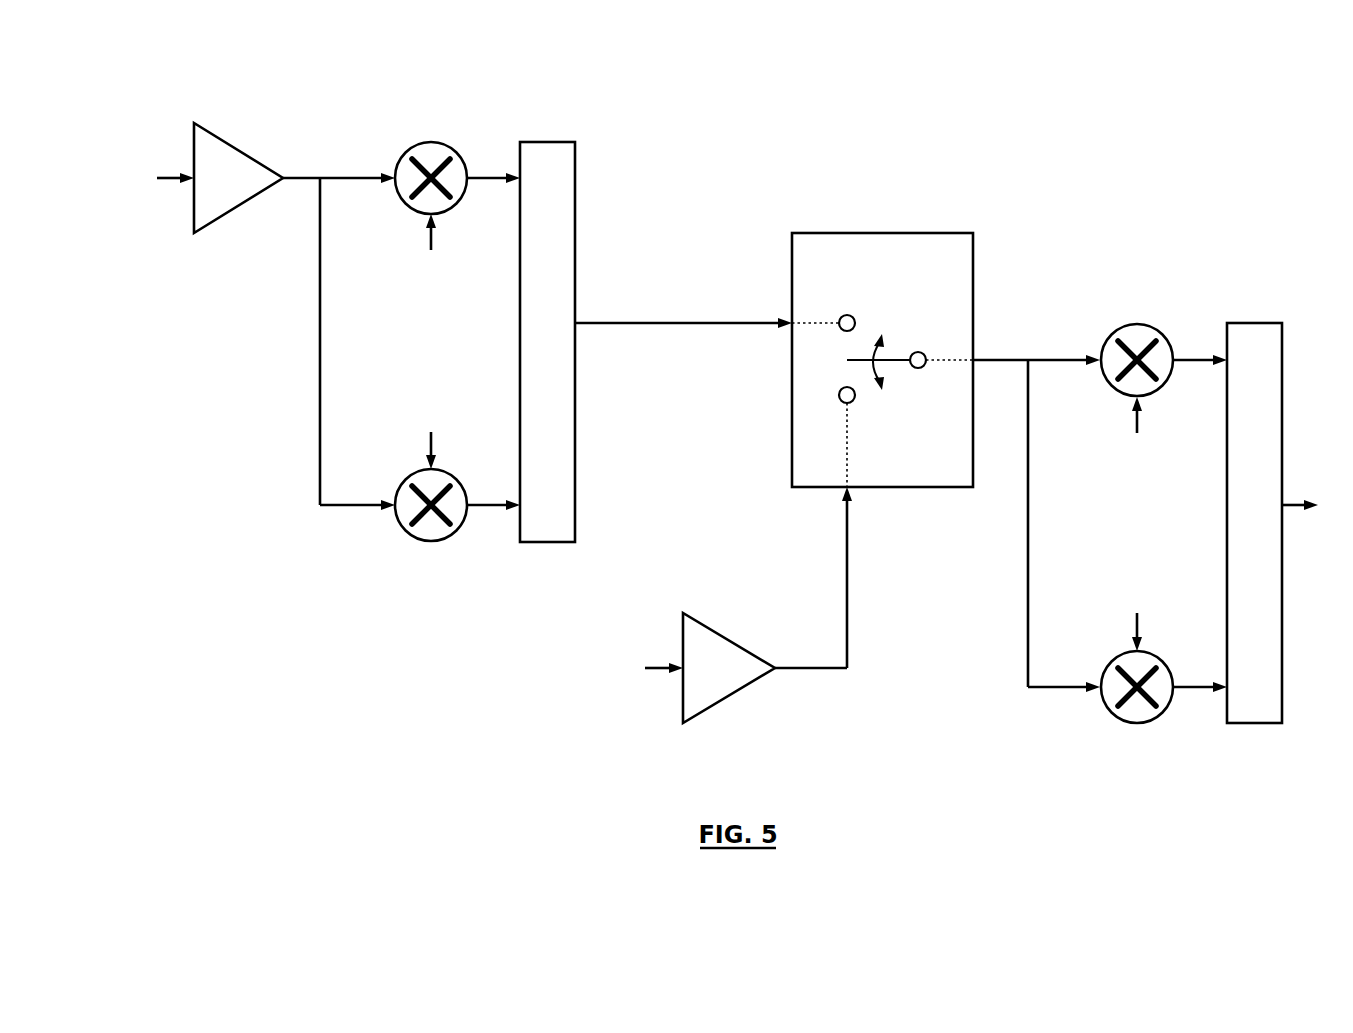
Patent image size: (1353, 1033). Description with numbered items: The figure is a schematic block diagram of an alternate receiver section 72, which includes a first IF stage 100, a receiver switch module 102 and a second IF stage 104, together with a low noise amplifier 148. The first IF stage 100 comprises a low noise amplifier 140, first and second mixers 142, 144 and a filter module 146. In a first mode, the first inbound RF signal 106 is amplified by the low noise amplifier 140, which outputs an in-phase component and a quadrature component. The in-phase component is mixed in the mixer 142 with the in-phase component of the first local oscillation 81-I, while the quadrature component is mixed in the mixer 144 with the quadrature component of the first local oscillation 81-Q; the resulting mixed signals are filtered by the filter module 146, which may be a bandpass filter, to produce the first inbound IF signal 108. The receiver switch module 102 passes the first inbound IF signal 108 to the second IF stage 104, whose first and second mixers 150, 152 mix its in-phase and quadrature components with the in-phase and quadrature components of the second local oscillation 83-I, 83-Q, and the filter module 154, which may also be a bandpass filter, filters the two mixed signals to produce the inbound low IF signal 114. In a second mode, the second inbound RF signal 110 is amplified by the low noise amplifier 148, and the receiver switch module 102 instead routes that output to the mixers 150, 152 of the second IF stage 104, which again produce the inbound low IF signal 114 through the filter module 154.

The receiver section 72 is at (847, 878).
The first IF stage 100 is at (284, 52).
The second IF stage 104 is at (1263, 52).
The first inbound RF signal 106 is at (144, 175).
The low noise amplifier 140 is at (238, 163).
The first mixer 142 is at (457, 163).
The second mixer 144 is at (457, 520).
The filter module 146 is at (547, 342).
The in-phase component of the first local oscillation 81-I is at (430, 267).
The quadrature component of the first local oscillation 81-Q is at (430, 420).
The first inbound IF signal 108 is at (683, 332).
The receiver switch module 102 is at (882, 360).
The second inbound RF signal 110 is at (585, 669).
The low noise amplifier 148 is at (729, 650).
The first mixer 150 is at (1164, 345).
The second mixer 152 is at (1164, 701).
The in-phase component of the second local oscillation 83-I is at (1137, 450).
The quadrature component of the second local oscillation 83-Q is at (1137, 602).
The filter module 154 is at (1254, 523).
The inbound low IF signal 114 is at (1314, 503).